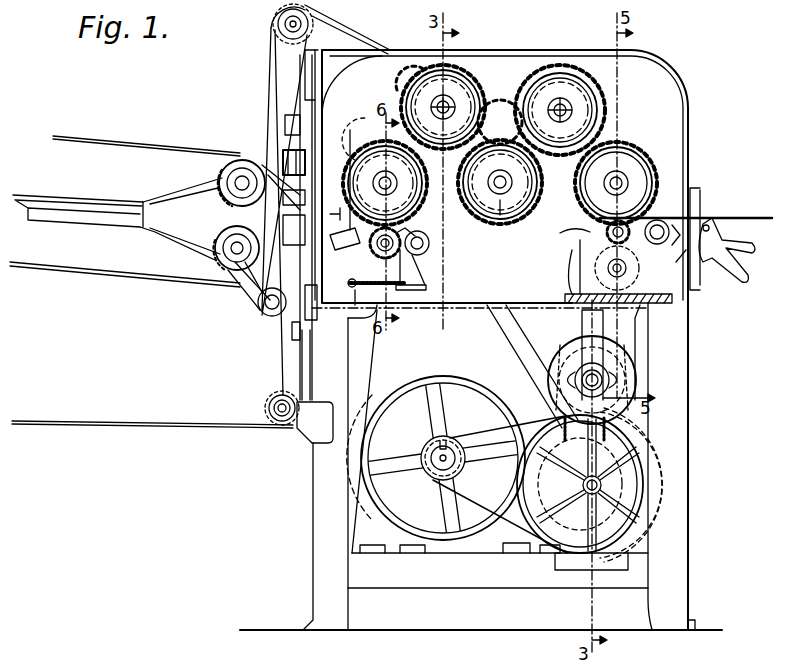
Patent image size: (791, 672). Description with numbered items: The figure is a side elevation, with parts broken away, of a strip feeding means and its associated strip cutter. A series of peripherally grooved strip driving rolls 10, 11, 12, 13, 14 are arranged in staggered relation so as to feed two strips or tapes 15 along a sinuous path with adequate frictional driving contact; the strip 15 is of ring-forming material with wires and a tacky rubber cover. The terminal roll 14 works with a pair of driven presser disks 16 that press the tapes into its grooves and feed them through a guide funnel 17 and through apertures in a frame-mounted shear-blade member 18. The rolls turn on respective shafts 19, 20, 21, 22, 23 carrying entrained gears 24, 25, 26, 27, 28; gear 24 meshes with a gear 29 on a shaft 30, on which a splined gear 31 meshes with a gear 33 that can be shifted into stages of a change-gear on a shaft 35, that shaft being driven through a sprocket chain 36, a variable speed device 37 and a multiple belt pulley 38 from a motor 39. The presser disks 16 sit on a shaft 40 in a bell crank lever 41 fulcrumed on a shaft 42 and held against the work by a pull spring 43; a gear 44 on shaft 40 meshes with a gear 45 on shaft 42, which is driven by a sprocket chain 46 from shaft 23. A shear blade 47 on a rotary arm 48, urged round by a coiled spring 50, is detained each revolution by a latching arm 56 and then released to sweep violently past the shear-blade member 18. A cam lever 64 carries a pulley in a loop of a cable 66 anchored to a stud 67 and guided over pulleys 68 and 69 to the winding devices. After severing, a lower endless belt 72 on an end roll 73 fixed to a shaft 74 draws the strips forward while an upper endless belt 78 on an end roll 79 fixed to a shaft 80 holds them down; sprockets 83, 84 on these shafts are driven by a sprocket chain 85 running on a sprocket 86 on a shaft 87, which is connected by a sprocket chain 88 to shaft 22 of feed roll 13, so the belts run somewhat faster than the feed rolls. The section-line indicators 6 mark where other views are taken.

The sprocket / section line 6- 6 is at (385, 183).
The strip driving roll 10 is at (620, 165).
The strip driving roll 11 is at (560, 110).
The strip driving roll 12 is at (500, 182).
The strip driving roll 13 is at (443, 107).
The terminal roll 14 is at (360, 160).
The strip 15 is at (767, 217).
The presser disk 16 is at (378, 250).
The guide funnel 17 is at (339, 246).
The shear-blade member 18 is at (296, 229).
The shaft 19 is at (588, 228).
The shaft 20 is at (570, 108).
The shaft 21 is at (505, 220).
The shaft 22 is at (448, 104).
The shaft 23 is at (333, 205).
The gear 24 is at (655, 165).
The gear 25 is at (540, 65).
The gear 26 is at (503, 118).
The gear 27 is at (402, 87).
The gear 28 is at (362, 115).
The gear 29 is at (690, 257).
The shaft 30 is at (690, 262).
The gear 31 is at (672, 222).
The gear 33 is at (605, 238).
The shaft 35 is at (575, 272).
The sprocket chain 36 is at (568, 338).
The variable speed device 37 is at (613, 453).
The multiple belt pulley 38 is at (613, 482).
The motor 39 is at (440, 510).
The shaft 40 is at (361, 284).
The bell crank lever 41 is at (428, 280).
The shaft 42 is at (425, 250).
The pull spring 43 is at (357, 303).
The gear 44 is at (403, 311).
The gear 45 is at (430, 243).
The sprocket chain 46 is at (425, 229).
The shear blade 47 is at (304, 170).
The rotary arm 48 is at (305, 158).
The coiled spring 50 is at (262, 292).
The latching arm 56 is at (305, 124).
The cam lever 64 is at (290, 170).
The cable 66 is at (97, 427).
The stud 67 is at (314, 318).
The guide pulley 68 is at (290, 339).
The guide pulley 69 is at (270, 402).
The lower endless belt 72 is at (113, 283).
The end roll 73 is at (205, 268).
The shaft 74 is at (228, 265).
The upper endless belt 78 is at (104, 148).
The end roll 79 is at (216, 183).
The shaft 80 is at (237, 170).
The sprocket 83 is at (226, 236).
The sprocket 84 is at (258, 165).
The sprocket chain 85 is at (268, 60).
The sprocket 86 is at (282, 24).
The shaft 87 is at (290, 30).
The sprocket chain 88 is at (340, 36).